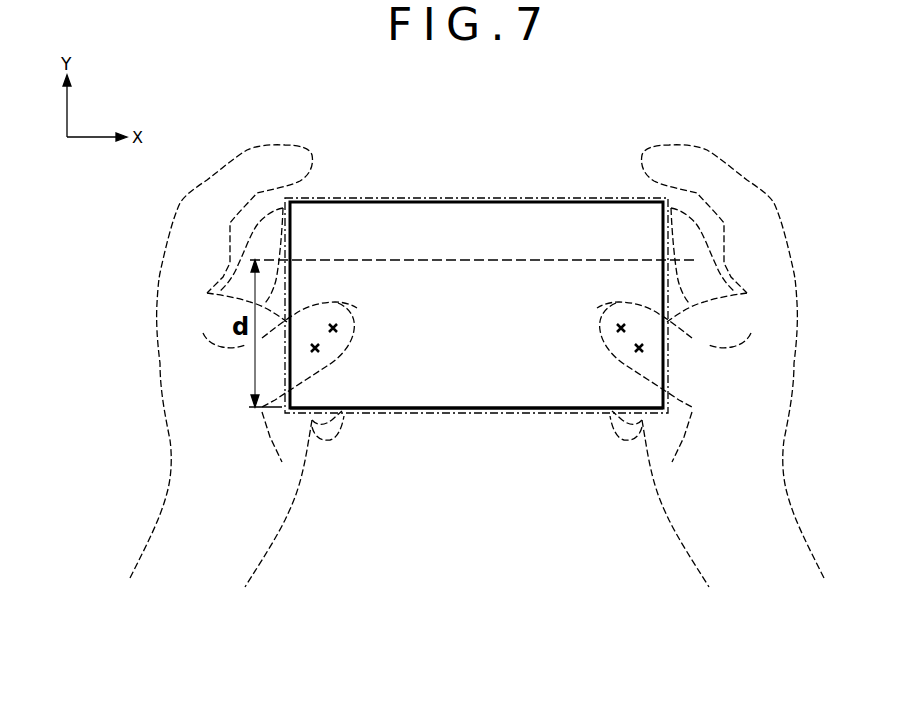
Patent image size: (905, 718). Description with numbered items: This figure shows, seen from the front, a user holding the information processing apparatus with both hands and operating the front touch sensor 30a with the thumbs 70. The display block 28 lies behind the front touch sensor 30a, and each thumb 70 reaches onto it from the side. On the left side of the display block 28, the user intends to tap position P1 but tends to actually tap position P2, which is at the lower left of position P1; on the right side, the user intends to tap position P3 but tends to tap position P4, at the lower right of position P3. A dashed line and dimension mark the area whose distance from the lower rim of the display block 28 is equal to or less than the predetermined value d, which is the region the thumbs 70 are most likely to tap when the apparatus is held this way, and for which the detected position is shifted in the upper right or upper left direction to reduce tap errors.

The display block 28 is at (497, 202).
The front touch sensor 30a is at (475, 413).
The thumb 70 is at (357, 308).
The position P1 is at (333, 334).
The position P2 is at (315, 353).
The position P3 is at (621, 334).
The position P4 is at (639, 353).